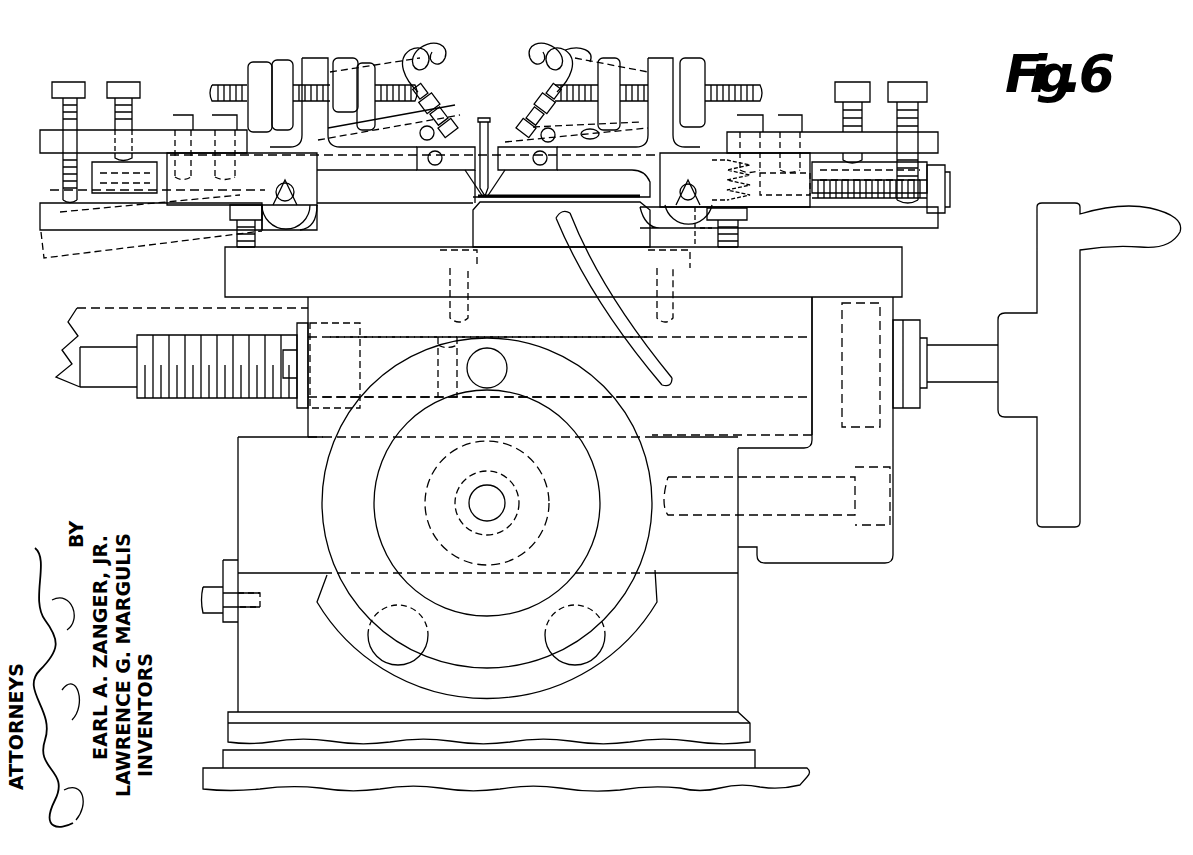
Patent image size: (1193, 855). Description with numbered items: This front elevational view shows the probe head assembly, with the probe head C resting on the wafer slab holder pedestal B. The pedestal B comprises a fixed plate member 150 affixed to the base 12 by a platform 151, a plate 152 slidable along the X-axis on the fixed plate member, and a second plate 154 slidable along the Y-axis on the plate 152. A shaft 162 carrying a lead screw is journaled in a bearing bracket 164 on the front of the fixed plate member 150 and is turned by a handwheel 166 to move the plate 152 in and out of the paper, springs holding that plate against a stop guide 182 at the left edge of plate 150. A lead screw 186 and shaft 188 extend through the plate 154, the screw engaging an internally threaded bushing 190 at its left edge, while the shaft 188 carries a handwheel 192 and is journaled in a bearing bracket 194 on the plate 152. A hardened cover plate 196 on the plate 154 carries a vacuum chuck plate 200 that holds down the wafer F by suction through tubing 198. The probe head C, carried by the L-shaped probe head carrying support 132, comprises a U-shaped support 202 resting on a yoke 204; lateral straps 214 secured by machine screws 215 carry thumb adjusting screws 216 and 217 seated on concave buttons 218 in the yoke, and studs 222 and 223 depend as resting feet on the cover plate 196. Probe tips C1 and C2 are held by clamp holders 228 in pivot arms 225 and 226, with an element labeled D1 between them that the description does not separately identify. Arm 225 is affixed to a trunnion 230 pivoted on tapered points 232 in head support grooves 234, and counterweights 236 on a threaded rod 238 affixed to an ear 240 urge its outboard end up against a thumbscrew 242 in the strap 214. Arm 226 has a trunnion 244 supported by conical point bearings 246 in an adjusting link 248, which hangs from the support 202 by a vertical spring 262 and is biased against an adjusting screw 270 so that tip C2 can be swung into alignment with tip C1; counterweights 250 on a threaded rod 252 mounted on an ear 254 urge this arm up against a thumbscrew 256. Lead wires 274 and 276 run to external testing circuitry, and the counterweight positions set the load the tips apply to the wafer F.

The base 12 is at (788, 777).
The platform 151 is at (738, 730).
The X-axis plate 152 is at (252, 510).
The fixed plate member 150 is at (252, 635).
The Y-axis plate 154 is at (332, 420).
The cover plate 196 is at (387, 288).
The bearing bracket 194 is at (847, 557).
The shaft 188 is at (975, 373).
The handwheel 192 is at (1065, 247).
The handwheel 166 is at (335, 513).
The shaft 162 is at (495, 510).
The bearing bracket 164 is at (637, 605).
The stop guide 182 is at (230, 560).
The wafer slab holder pedestal B is at (236, 711).
The probe head carrying support 132 is at (122, 323).
The lead screw 186 is at (195, 388).
The internally threaded bushing 190 is at (297, 407).
The lateral straps 214 is at (145, 137).
The thumbscrew 242 is at (73, 83).
The thumb adjusting screw 216 is at (130, 83).
The machine screws 215 is at (210, 125).
The trunnion 230 is at (258, 188).
The concave buttons 218 is at (108, 197).
The yoke 204 is at (145, 182).
The pivot arm 225 is at (108, 243).
The probe head C is at (230, 236).
The U-shaped support 202 is at (317, 184).
The tapered points 232 is at (293, 217).
The head support grooves 234 is at (300, 216).
The stud 222 is at (248, 247).
The vacuum chuck plate 200 is at (531, 250).
The wafer F is at (548, 196).
The probe tip C1 is at (478, 190).
The probe tip C2 is at (494, 190).
The die D1 is at (488, 118).
The pivot arm 226 is at (588, 197).
The tubing 198 is at (597, 278).
The trunnion 244 is at (665, 190).
The vertical spring 262 is at (722, 162).
The adjusting link 248 is at (780, 214).
The stud 223 is at (738, 237).
The conical point bearings 246 is at (695, 228).
The thumb adjusting screw 217 is at (860, 85).
The thumbscrew 256 is at (908, 104).
The adjusting screw 270 is at (938, 188).
The threaded rod 238 is at (232, 88).
The counterweights 236 is at (282, 65).
The ear 240 is at (360, 110).
The clamp holders 228 is at (440, 120).
The lead wire 274 is at (440, 48).
The lead wire 276 is at (560, 55).
The ear 254 is at (597, 135).
The counterweights 250 is at (693, 63).
The threaded rod 252 is at (742, 83).